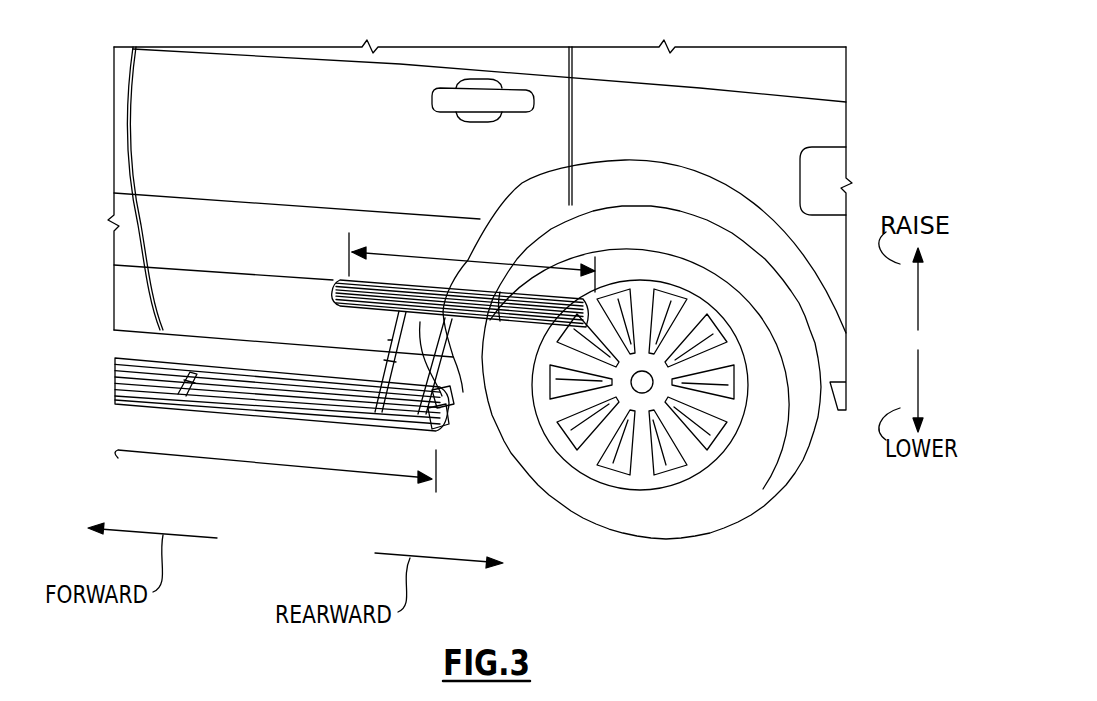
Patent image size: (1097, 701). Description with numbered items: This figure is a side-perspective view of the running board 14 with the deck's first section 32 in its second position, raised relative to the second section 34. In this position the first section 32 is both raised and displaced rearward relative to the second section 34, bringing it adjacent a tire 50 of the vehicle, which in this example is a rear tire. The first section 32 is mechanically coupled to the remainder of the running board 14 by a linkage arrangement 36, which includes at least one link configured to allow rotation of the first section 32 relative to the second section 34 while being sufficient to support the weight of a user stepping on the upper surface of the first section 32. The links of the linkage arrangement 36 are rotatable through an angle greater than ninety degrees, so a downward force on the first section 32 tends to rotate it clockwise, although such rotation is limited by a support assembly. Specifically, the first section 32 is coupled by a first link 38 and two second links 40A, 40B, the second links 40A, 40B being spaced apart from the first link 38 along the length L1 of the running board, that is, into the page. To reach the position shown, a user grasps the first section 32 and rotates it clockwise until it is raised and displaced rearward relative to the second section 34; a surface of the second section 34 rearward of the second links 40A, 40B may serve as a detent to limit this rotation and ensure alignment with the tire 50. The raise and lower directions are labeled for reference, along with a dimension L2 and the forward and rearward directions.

The running board 14 is at (351, 371).
The first section 32 is at (417, 282).
The second section 34 is at (166, 360).
The linkage arrangement 36 is at (380, 338).
The first link 38 is at (387, 365).
The second link 40A is at (446, 424).
The second link 40B is at (455, 404).
The tire 50 is at (607, 513).
The length of the running board L1 is at (337, 477).
The second length L2 is at (467, 260).